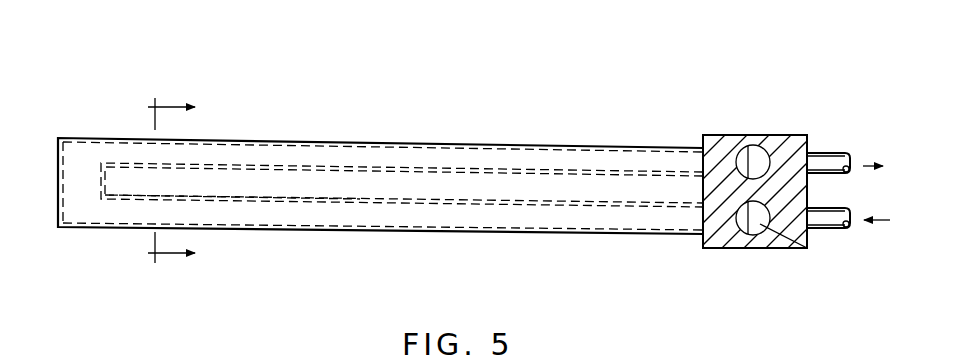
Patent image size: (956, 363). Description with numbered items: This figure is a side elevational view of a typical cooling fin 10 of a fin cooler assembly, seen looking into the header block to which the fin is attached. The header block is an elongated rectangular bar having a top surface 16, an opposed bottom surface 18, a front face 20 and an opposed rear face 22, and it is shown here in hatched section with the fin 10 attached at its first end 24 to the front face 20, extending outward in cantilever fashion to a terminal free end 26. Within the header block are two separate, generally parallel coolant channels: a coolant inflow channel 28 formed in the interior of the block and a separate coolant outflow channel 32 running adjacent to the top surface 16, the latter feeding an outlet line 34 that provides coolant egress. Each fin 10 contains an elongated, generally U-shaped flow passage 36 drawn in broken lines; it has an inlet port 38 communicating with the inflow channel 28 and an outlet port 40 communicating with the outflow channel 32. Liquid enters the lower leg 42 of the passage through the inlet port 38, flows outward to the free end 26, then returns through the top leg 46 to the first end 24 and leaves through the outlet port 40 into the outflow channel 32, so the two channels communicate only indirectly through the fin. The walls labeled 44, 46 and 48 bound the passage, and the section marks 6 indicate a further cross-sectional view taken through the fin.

The section line 6- 6 is at (179, 180).
The fin 10 is at (421, 127).
The top surface 16 is at (752, 135).
The bottom surface 18 is at (732, 249).
The front face 20 is at (703, 238).
The rear face 22 is at (807, 204).
The first end 24 is at (703, 148).
The free end 26 is at (58, 170).
The coolant inflow channel 28 is at (756, 236).
The coolant outflow channel 32 is at (760, 148).
The outlet line 34 is at (850, 160).
The flow passage 36 is at (365, 224).
The inlet port 38 is at (790, 238).
The outlet port 40 is at (807, 152).
The lower leg 42 is at (425, 225).
The outer tube bottom wall 44 is at (527, 233).
The top leg 46 is at (298, 152).
The outer tube top wall 48 is at (492, 146).